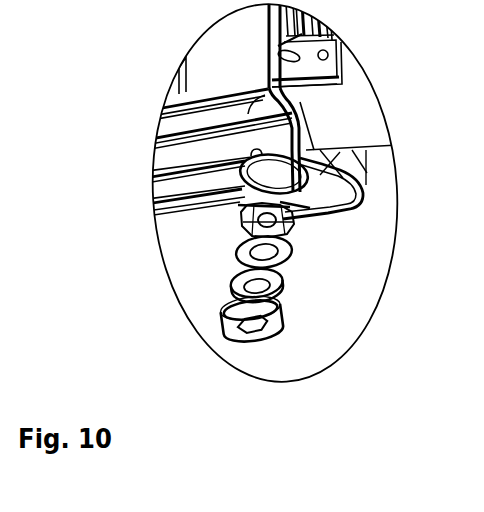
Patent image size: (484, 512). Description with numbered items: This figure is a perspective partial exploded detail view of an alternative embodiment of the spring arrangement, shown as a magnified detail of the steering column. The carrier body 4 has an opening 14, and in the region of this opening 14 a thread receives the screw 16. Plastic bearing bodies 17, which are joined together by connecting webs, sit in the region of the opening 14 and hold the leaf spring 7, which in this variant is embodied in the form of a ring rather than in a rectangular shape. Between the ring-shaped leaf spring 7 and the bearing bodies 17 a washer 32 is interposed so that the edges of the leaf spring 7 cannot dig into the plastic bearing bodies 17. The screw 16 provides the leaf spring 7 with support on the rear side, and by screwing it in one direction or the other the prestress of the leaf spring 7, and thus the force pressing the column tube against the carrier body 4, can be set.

The carrier body 4 is at (217, 116).
The bearing bodies 17 is at (213, 206).
The washer 32 is at (240, 248).
The leaf spring 7 is at (240, 285).
The screw 16 is at (223, 317).
The opening 14 is at (310, 192).